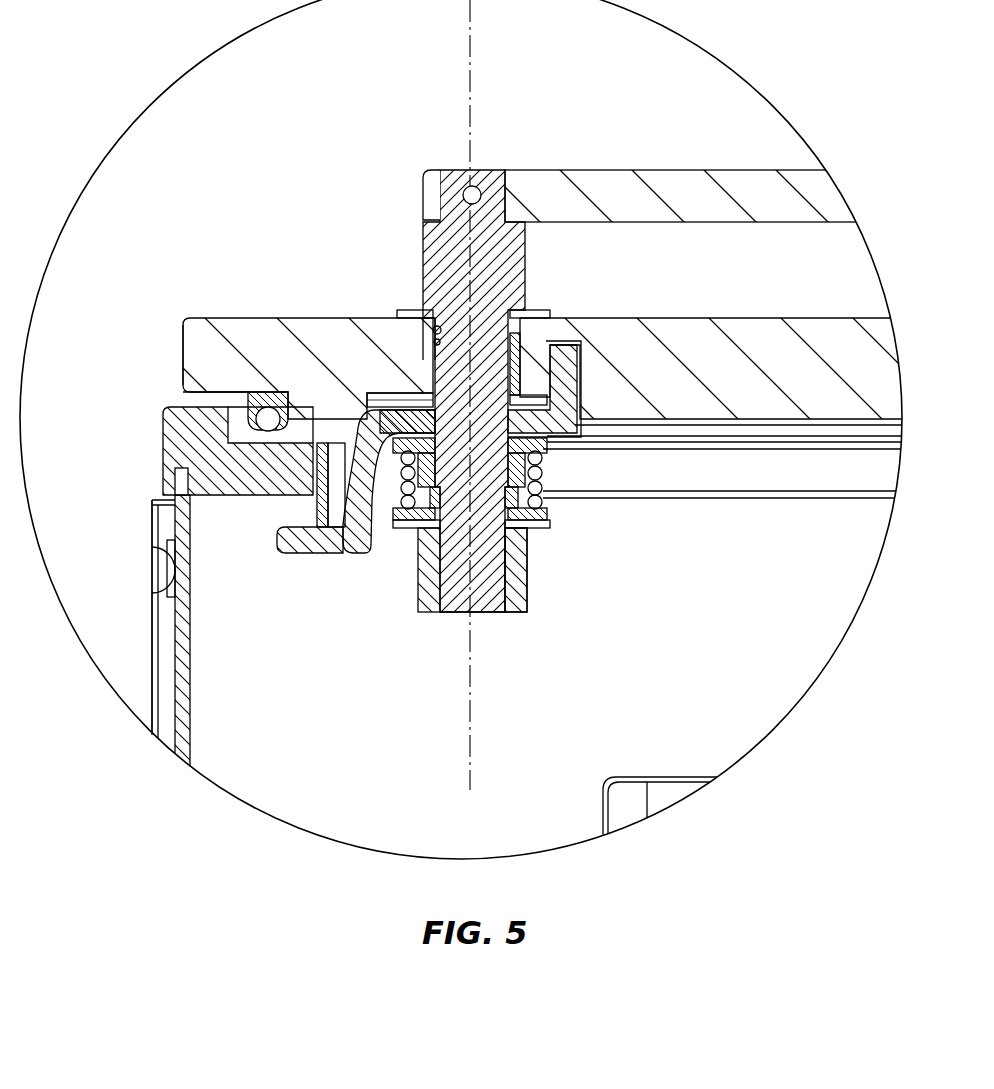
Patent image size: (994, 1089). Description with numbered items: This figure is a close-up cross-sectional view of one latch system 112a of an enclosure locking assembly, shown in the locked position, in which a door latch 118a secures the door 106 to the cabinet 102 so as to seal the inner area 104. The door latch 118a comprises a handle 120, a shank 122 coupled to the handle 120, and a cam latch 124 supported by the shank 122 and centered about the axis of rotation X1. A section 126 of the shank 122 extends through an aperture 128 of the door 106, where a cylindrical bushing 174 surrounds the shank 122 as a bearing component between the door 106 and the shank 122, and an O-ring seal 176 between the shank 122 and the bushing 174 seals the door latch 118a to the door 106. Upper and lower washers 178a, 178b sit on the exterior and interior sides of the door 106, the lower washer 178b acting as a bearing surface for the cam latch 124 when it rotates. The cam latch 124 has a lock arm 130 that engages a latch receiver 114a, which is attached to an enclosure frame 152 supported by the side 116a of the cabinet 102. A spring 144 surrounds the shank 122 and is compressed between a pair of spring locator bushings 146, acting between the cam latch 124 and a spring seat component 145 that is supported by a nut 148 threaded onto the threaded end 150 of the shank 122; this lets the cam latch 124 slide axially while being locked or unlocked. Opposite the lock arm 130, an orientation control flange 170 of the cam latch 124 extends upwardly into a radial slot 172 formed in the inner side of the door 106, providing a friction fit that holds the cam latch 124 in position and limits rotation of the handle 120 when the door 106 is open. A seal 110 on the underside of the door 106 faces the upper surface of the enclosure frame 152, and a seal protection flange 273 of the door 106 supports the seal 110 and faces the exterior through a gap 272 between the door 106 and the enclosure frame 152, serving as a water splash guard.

The axis of rotation X1 is at (473, 18).
The cabinet 102 is at (182, 660).
The inner area 104 is at (352, 812).
The door 106 is at (250, 330).
The seal 110 is at (250, 395).
The latch system 112a is at (300, 612).
The latch receiver 114a is at (310, 514).
The side of the cabinet 116a is at (126, 487).
The door latch 118a is at (438, 146).
The handle 120 is at (667, 180).
The shank 122 is at (500, 176).
The cam latch 124 is at (395, 500).
The section of the shank 126 is at (427, 355).
The aperture 128 is at (510, 312).
The lock arm 130 is at (344, 550).
The spring 144 is at (425, 512).
The spring seat component 145 is at (548, 522).
The spring locator bushings 146 is at (545, 500).
The nut 148 is at (545, 598).
The threaded end 150 is at (505, 615).
The enclosure frame 152 is at (163, 432).
The orientation control flange 170 is at (558, 365).
The radial slot 172 is at (565, 358).
The cylindrical bushing 174 is at (403, 400).
The O-ring seal 176 is at (447, 350).
The upper washer 178a is at (436, 326).
The lower washer 178b is at (427, 397).
The gap 272 is at (180, 397).
The seal protection flange 273 is at (250, 398).